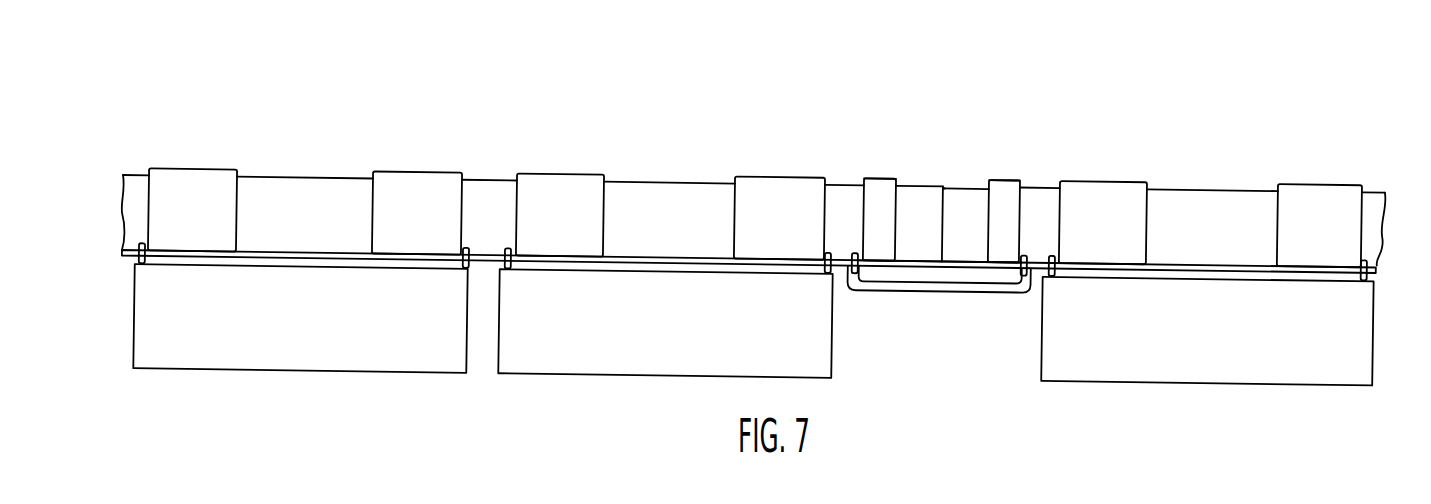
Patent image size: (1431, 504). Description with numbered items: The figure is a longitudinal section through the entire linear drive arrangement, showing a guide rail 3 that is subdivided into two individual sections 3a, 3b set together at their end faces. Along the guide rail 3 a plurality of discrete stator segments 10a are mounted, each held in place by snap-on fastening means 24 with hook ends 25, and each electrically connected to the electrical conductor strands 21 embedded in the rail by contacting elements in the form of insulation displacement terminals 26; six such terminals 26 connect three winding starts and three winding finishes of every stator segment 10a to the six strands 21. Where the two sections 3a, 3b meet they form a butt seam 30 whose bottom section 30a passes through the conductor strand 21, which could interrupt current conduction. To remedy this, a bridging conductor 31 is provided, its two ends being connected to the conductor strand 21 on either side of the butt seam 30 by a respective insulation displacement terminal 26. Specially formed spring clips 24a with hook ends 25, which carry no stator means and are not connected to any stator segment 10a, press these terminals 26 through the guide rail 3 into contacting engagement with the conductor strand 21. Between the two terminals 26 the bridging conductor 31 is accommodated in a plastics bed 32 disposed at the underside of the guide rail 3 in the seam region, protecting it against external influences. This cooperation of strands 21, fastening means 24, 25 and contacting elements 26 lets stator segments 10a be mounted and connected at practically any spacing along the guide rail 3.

The guide rail 3 is at (1373, 199).
The guide rail section 3a is at (945, 56).
The guide rail section 3b is at (950, 54).
The stator segment 10a is at (330, 362).
The electrical conductor strand 21 is at (1376, 249).
The fastening means 24 is at (189, 177).
The spring clip 24a is at (882, 202).
The hook end 25 is at (880, 167).
The insulation displacement terminal 26 is at (145, 265).
The butt seam 30 is at (947, 191).
The butt seam bottom section 30a is at (942, 249).
The bridging conductor 31 is at (884, 272).
The plastics bed 32 is at (927, 281).